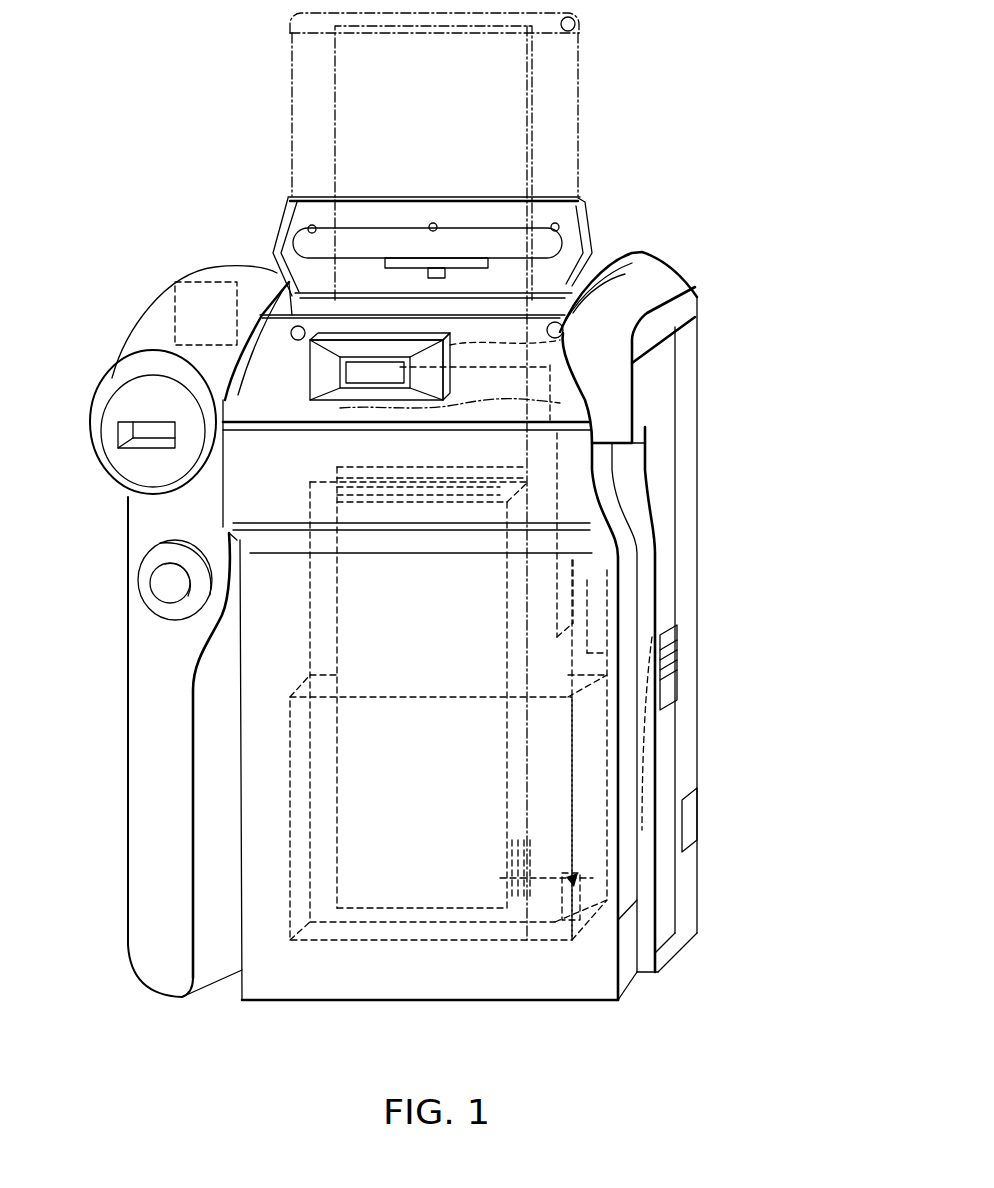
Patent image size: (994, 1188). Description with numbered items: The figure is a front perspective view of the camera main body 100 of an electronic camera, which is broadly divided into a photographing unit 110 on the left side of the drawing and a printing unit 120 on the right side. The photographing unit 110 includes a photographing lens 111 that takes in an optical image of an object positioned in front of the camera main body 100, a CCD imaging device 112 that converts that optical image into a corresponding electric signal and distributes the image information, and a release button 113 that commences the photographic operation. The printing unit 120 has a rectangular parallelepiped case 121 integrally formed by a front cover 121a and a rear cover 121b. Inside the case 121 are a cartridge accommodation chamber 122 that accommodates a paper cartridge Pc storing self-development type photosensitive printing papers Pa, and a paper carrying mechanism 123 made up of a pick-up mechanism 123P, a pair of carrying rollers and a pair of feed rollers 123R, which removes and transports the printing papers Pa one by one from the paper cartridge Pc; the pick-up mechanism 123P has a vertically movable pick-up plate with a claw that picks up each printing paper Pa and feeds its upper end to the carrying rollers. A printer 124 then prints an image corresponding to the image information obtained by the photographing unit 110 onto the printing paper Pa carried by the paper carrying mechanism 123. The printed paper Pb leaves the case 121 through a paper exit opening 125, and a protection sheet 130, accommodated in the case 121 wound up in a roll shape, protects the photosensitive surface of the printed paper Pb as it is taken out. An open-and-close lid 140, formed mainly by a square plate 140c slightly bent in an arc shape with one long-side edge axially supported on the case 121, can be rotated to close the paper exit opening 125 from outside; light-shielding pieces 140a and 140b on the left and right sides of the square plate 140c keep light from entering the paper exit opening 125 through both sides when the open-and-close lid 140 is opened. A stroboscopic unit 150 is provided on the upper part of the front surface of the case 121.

The camera main body 100 is at (742, 311).
The photographing unit 110 is at (127, 790).
The photographing lens 111 is at (123, 412).
The CCD imaging device 112 is at (173, 297).
The release button 113 is at (137, 582).
The printing unit 120 is at (768, 755).
The case 121 is at (781, 924).
The front cover 121a is at (660, 973).
The rear cover 121b is at (688, 938).
The cartridge accommodation chamber 122 is at (352, 942).
The paper carrying mechanism 123 is at (597, 603).
The pick-up mechanism 123P is at (590, 952).
The feed rollers 123R is at (368, 298).
The printer 124 is at (560, 497).
The paper exit opening 125 is at (280, 293).
The protection sheet 130 is at (293, 128).
The open-and-close lid 140 is at (548, 195).
The light-shielding piece 140a is at (288, 206).
The light-shielding piece 140b is at (582, 236).
The square plate 140c is at (440, 196).
The stroboscopic unit 150 is at (350, 372).
The printing paper Pa is at (497, 925).
The printed paper Pb is at (532, 118).
The paper cartridge Pc is at (427, 925).